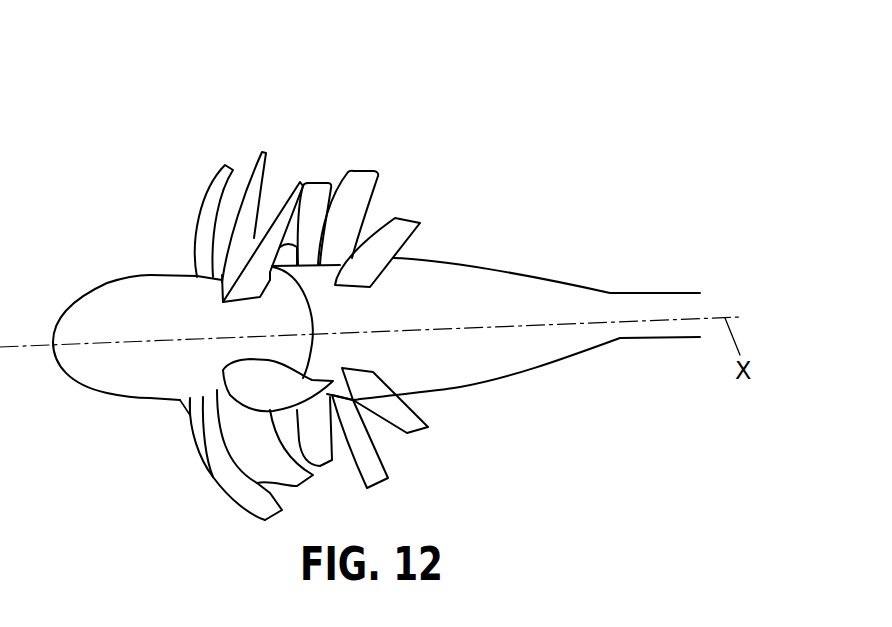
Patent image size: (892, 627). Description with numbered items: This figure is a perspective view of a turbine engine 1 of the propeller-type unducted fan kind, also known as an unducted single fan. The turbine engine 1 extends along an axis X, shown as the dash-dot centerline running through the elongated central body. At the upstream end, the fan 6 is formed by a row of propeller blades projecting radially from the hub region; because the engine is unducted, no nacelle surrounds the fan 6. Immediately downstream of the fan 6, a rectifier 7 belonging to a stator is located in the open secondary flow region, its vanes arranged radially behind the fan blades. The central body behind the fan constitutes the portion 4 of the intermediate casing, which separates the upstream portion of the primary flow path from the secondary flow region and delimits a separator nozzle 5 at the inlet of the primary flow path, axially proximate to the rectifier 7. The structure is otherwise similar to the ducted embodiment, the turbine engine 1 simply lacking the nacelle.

The turbine engine 1 is at (352, 142).
The portion of intermediate casing 4 is at (353, 310).
The separator nozzle 5 is at (307, 322).
The fan 6 is at (208, 205).
The rectifier 7 is at (355, 202).